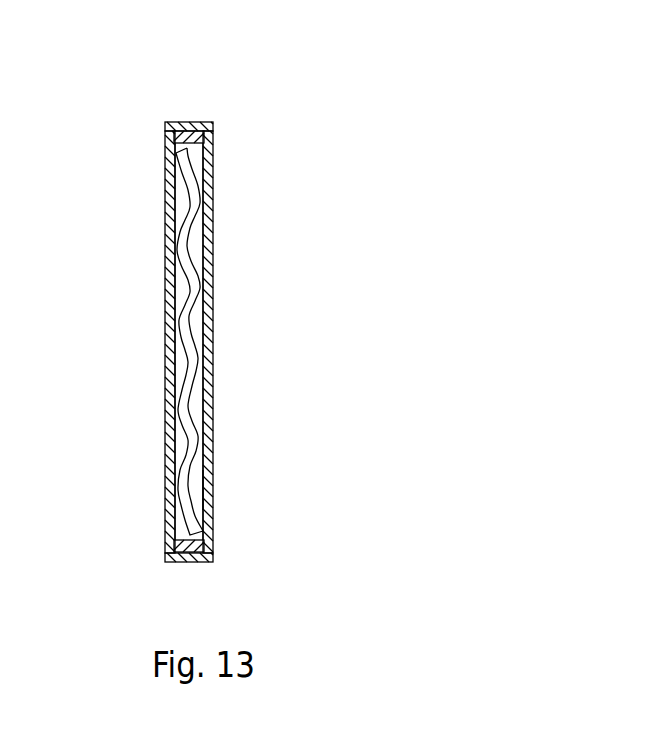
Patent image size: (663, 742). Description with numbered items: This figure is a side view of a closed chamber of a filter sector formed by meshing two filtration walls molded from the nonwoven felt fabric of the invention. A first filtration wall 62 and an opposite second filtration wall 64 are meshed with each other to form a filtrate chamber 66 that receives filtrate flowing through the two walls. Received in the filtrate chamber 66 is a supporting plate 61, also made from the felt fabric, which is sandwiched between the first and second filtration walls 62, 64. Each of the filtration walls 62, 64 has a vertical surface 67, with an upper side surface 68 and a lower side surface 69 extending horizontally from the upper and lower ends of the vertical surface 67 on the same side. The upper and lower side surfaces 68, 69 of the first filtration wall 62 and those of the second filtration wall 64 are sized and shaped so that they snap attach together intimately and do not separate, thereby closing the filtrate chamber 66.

The supporting plate 61 is at (195, 357).
The first filtration wall 62 is at (167, 248).
The second filtration wall 64 is at (213, 297).
The filtrate chamber 66 is at (203, 491).
The vertical surface 67 is at (213, 198).
The upper side surface 68 is at (190, 123).
The lower side surface 69 is at (175, 545).